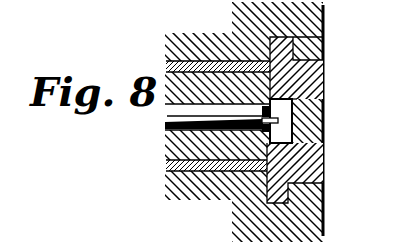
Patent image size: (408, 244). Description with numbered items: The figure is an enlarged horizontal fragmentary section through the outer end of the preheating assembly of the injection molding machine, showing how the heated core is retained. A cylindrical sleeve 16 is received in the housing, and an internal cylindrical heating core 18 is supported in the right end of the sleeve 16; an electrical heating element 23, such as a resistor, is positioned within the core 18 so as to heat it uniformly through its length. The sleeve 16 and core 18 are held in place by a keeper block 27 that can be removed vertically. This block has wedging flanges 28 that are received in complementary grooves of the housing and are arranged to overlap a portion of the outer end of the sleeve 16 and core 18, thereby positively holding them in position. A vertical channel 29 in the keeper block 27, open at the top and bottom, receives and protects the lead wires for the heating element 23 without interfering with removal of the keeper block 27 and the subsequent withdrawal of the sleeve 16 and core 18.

The cylindrical sleeve 16 is at (208, 68).
The internal cylindrical heating core 18 is at (177, 80).
The electrical heating element 23 is at (167, 122).
The keeper block 27 is at (303, 158).
The wedging flanges 28 is at (293, 44).
The vertical channel 29 is at (283, 108).